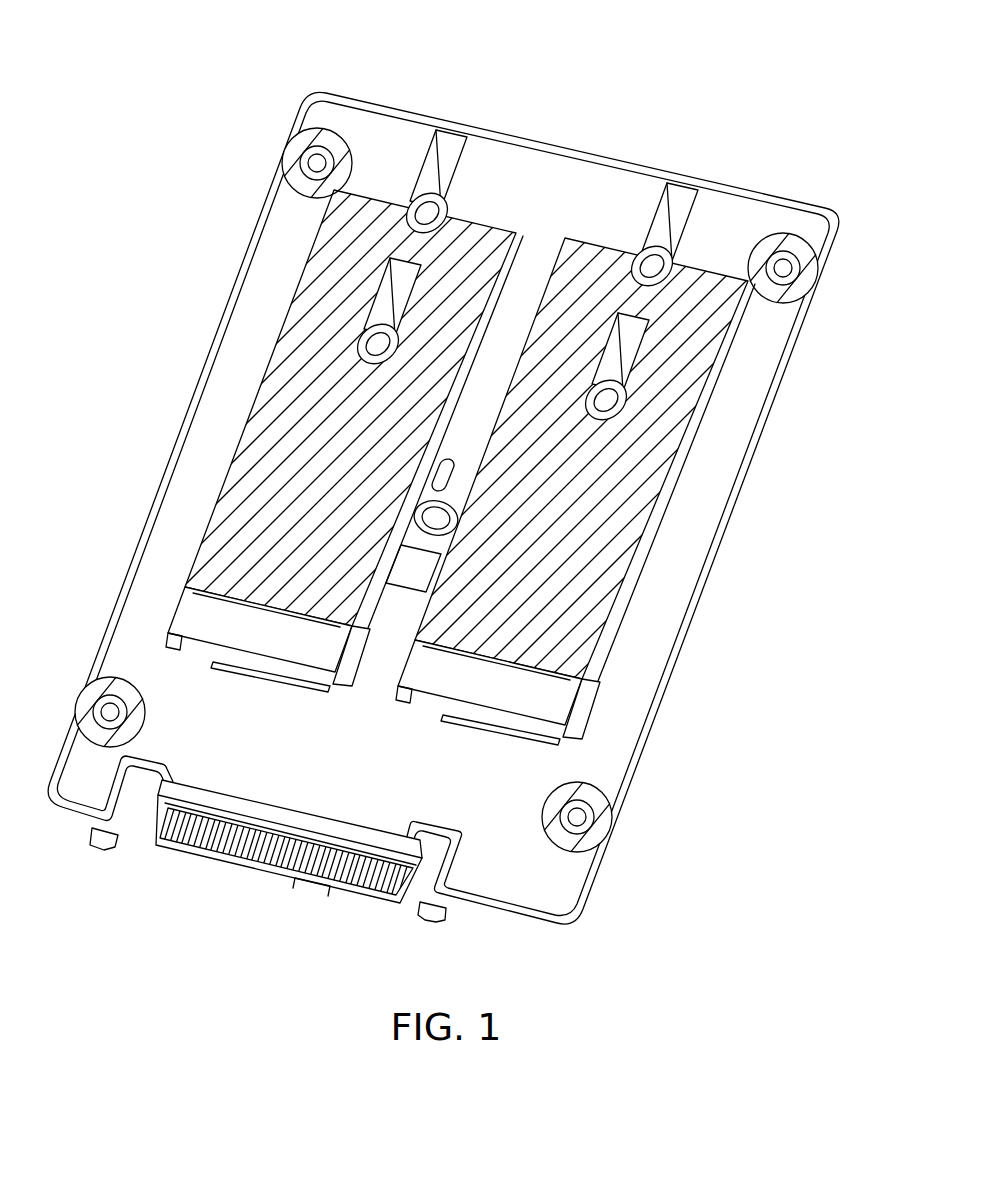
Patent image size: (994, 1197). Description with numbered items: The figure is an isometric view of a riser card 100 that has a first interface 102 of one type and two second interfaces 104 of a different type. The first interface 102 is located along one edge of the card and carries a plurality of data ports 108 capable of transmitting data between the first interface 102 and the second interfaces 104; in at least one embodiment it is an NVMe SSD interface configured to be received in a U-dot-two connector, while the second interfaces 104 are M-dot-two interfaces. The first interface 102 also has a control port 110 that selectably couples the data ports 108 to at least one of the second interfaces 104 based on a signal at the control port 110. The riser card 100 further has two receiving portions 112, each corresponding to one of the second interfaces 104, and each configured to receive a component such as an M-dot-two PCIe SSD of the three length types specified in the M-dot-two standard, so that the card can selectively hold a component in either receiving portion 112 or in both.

The riser card 100 is at (497, 500).
The first interface 102 is at (173, 853).
The second interfaces 104 is at (192, 608).
The data ports 108 is at (347, 886).
The control port 110 is at (263, 868).
The receiving portions 112 is at (297, 423).